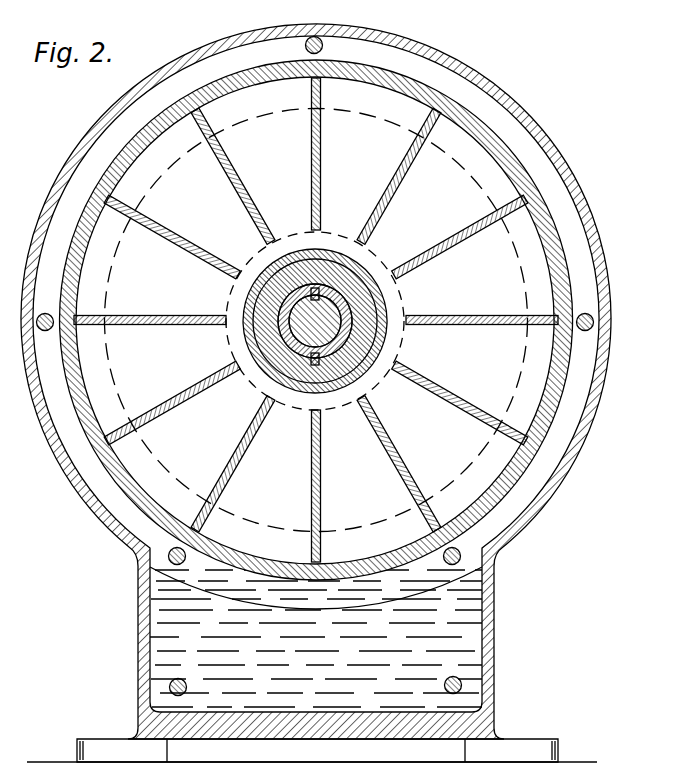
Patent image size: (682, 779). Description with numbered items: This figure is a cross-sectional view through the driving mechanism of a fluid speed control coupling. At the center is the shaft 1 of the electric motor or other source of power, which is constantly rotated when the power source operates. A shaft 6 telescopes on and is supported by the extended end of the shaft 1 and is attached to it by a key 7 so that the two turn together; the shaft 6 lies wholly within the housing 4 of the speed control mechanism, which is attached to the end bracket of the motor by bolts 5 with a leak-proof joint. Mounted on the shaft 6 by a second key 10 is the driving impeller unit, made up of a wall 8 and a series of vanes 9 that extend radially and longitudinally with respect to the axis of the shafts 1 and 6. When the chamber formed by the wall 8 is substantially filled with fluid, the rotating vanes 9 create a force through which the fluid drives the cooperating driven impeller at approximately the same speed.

The shaft 1 is at (330, 303).
The housing 4 is at (588, 214).
The bolts 5 is at (323, 46).
The shaft 6 is at (347, 333).
The key 7 is at (315, 295).
The wall 8 is at (513, 160).
The vanes 9 is at (460, 245).
The key 10 is at (315, 358).